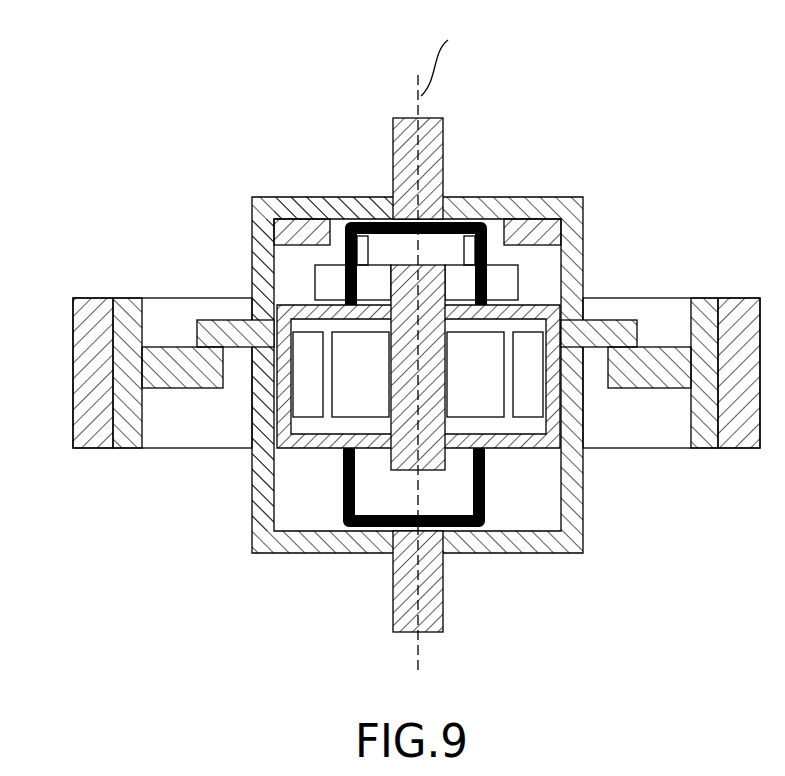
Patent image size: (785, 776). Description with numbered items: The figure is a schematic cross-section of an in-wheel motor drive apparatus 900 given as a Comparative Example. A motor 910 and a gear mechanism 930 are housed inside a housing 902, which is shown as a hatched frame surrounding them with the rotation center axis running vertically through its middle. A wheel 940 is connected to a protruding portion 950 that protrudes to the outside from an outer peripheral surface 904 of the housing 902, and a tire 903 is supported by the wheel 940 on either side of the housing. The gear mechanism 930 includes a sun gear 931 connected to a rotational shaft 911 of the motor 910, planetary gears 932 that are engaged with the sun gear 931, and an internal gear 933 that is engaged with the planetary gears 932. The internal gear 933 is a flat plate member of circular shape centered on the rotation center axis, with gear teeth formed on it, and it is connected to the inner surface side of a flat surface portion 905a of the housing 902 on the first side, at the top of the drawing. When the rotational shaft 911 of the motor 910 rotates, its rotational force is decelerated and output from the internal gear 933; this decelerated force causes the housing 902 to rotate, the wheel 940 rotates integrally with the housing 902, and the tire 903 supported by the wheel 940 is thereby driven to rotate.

The in-wheel motor drive apparatus 900 is at (280, 110).
The housing 902 is at (512, 197).
The tire 903 is at (88, 298).
The outer peripheral surface 904 is at (252, 230).
The flat surface portion 905a is at (327, 197).
The motor 910 is at (525, 448).
The rotational shaft 911 is at (400, 452).
The gear mechanism 930 is at (532, 267).
The sun gear 931 is at (445, 265).
The planetary gears 932 is at (520, 293).
The internal gear 933 is at (551, 222).
The wheel 940 is at (185, 388).
The protruding portion 950 is at (201, 316).